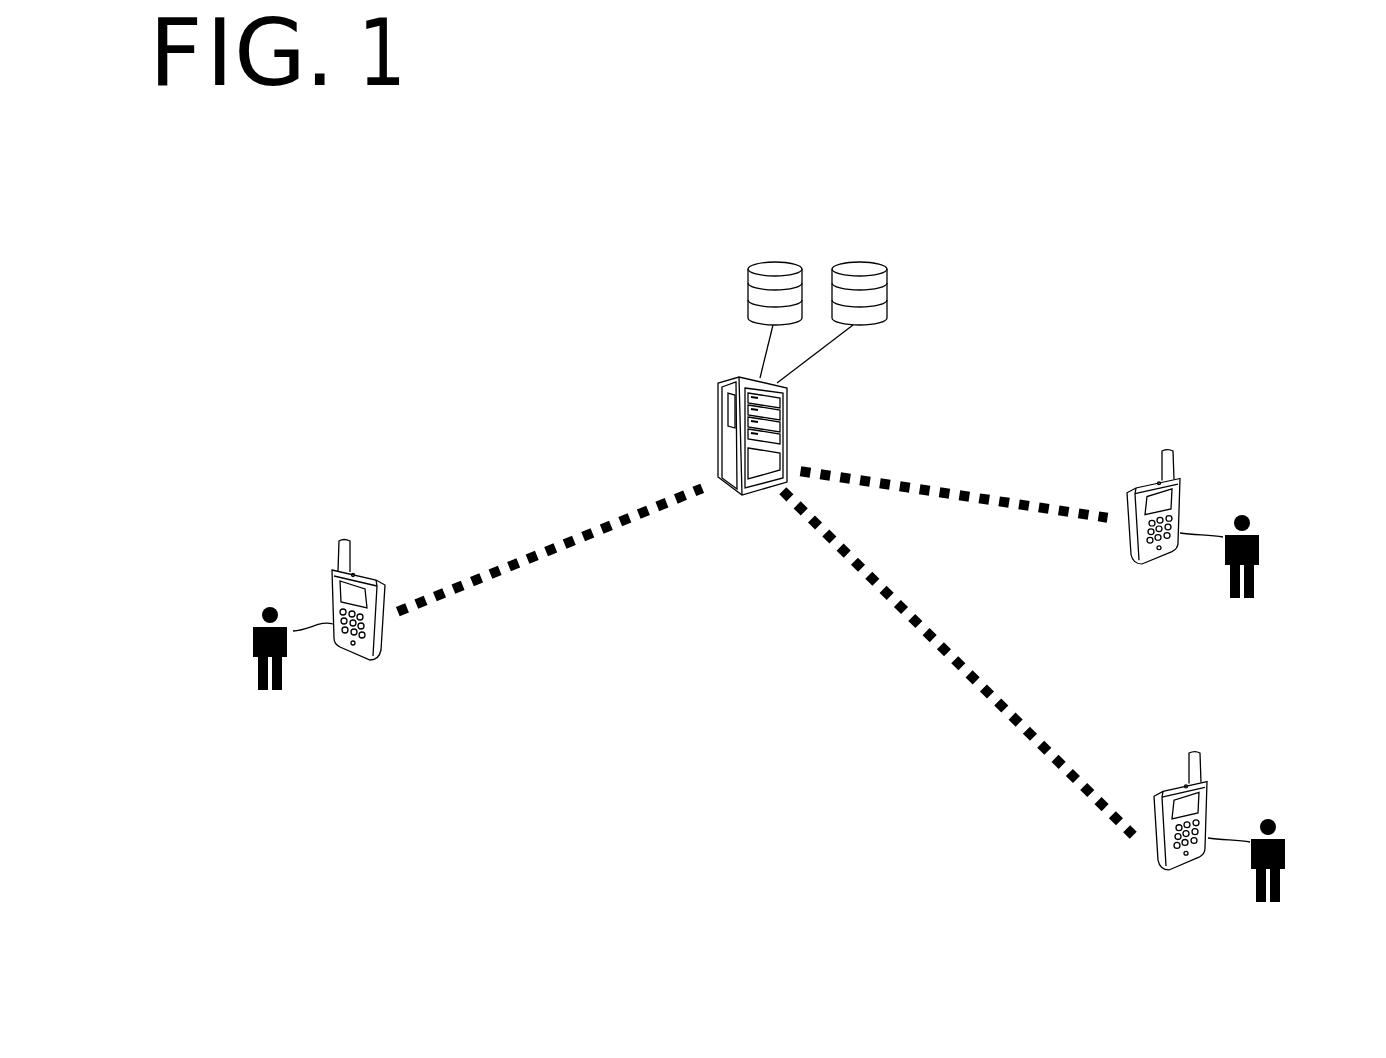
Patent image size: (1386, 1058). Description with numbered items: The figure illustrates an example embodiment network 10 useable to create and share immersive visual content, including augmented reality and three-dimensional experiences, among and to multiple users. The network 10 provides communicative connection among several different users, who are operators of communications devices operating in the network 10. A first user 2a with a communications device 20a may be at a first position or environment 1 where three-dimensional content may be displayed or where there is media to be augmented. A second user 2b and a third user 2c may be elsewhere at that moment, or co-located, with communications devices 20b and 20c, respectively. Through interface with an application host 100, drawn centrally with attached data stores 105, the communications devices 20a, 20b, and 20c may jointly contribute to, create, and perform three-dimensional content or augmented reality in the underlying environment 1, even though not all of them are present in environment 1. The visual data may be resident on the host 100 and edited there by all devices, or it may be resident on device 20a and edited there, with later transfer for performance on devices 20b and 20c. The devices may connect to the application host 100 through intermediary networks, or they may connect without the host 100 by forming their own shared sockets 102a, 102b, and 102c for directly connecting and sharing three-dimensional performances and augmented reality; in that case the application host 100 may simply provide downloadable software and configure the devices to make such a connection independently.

The environment 1 is at (287, 536).
The network 10 is at (505, 318).
The first user 2a is at (258, 692).
The second user 2b is at (1252, 600).
The third user 2c is at (1278, 903).
The communications device 20a is at (373, 660).
The communications device 20b is at (1142, 470).
The communications device 20c is at (1170, 775).
The application host 100 is at (721, 406).
The shared socket 102a is at (492, 575).
The shared socket 102b is at (923, 492).
The communication link 102c is at (870, 582).
The database 105 is at (748, 289).